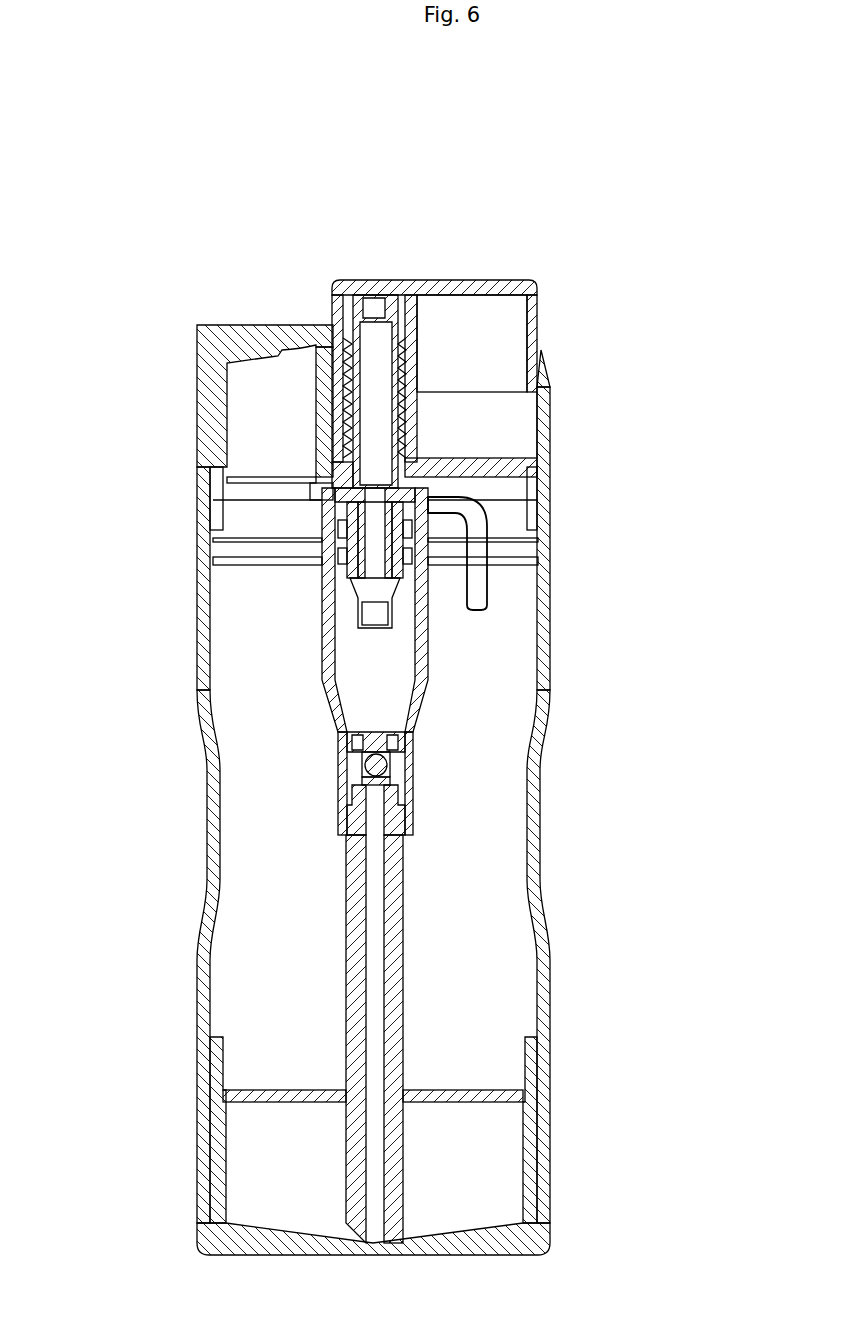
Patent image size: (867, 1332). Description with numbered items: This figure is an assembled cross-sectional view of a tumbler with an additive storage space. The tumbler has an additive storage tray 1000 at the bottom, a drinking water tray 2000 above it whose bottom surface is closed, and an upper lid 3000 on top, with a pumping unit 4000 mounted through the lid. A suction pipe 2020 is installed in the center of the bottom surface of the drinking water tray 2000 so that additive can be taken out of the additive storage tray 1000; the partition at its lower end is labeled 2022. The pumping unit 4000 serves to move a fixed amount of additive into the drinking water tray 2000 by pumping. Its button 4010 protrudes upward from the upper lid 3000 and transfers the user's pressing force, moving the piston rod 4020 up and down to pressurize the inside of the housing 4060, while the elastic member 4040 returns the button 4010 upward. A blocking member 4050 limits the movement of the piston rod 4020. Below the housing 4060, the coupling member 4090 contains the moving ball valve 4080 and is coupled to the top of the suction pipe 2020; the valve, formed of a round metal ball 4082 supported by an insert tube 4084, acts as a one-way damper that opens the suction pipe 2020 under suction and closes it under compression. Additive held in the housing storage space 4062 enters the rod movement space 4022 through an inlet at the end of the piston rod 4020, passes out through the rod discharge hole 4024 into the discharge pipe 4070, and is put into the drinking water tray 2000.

The additive storage tray 1000 is at (542, 1176).
The drinking water tray 2000 is at (410, 840).
The suction pipe 2020 is at (543, 890).
The partition plate 2022 is at (378, 990).
The upper lid 3000 is at (548, 455).
The pumping unit 4000 is at (514, 272).
The button 4010 is at (432, 278).
The piston rod 4020 is at (377, 413).
The rod movement space 4022 is at (420, 540).
The rod discharge hole 4024 is at (337, 495).
The elastic member 4040 is at (420, 358).
The blocking member 4050 is at (340, 580).
The housing 4060 is at (432, 632).
The housing storage space 4062 is at (383, 660).
The discharge pipe 4070 is at (500, 580).
The moving ball valve 4080 is at (417, 737).
The ball 4082 is at (362, 752).
The insert tube 4084 is at (342, 732).
The coupling member 4090 is at (415, 788).